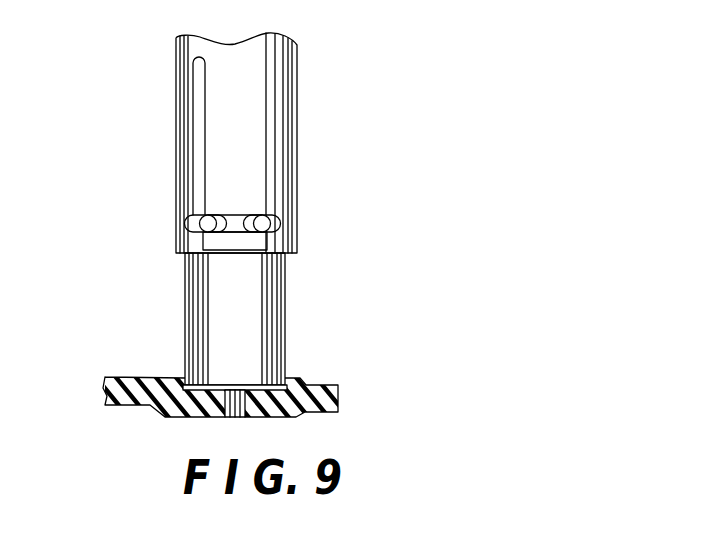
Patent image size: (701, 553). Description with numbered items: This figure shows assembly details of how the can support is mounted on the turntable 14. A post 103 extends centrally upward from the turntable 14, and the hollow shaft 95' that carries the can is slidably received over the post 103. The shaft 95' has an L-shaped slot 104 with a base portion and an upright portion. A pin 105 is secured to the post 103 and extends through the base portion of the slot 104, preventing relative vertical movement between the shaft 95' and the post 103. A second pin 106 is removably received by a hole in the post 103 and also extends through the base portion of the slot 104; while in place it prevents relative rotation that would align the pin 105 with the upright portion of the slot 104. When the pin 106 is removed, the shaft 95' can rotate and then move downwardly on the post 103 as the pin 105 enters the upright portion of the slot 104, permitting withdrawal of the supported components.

The turntable 14 is at (141, 367).
The hollow shaft 95' is at (283, 143).
The post 103 is at (275, 300).
The L-shaped slot 104 is at (203, 146).
The pin 105 is at (203, 221).
The second pin 106 is at (268, 220).